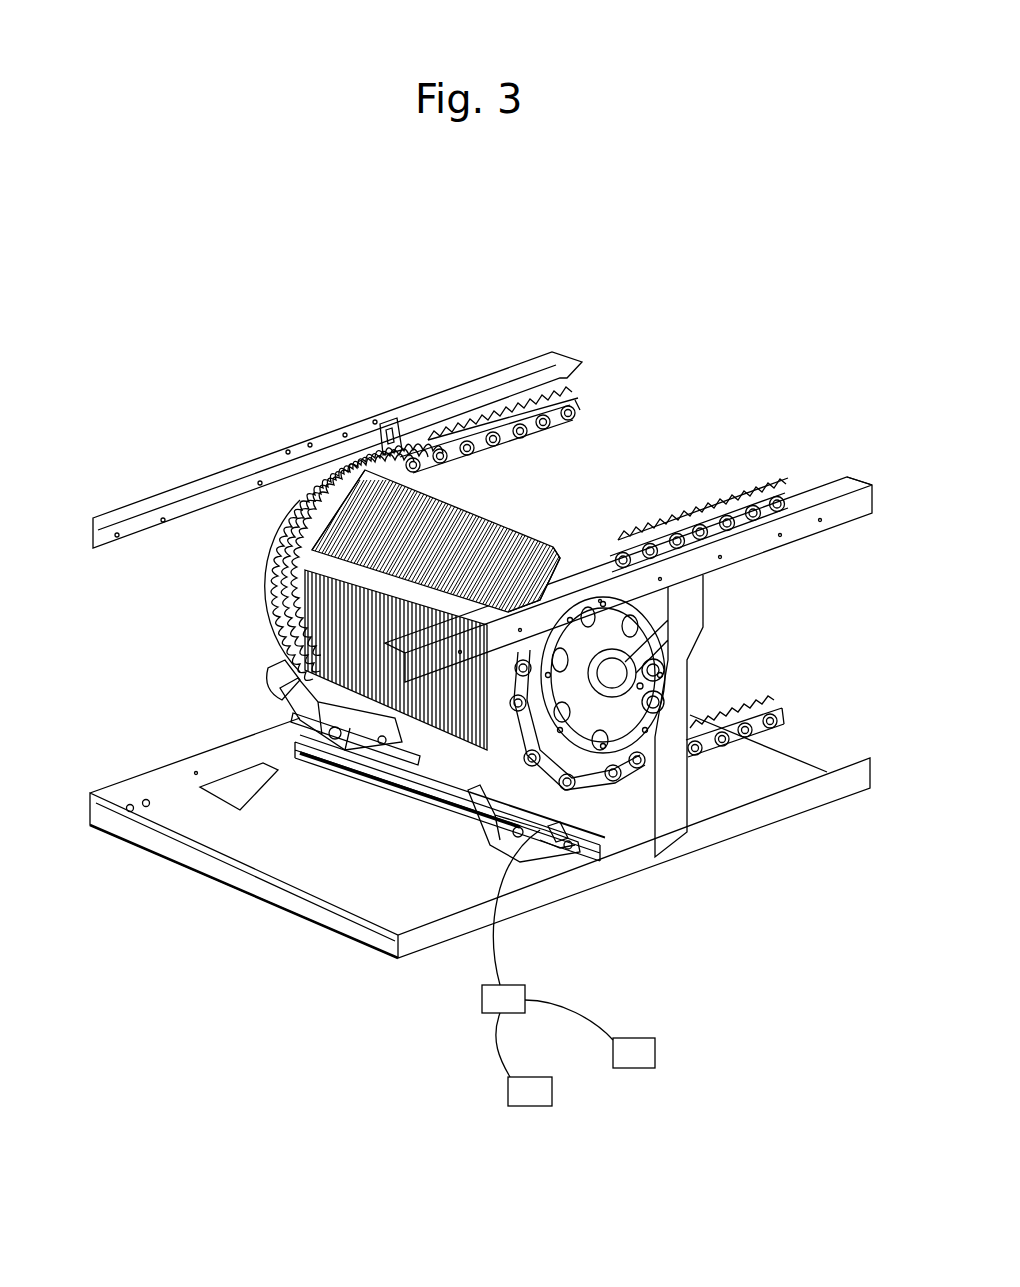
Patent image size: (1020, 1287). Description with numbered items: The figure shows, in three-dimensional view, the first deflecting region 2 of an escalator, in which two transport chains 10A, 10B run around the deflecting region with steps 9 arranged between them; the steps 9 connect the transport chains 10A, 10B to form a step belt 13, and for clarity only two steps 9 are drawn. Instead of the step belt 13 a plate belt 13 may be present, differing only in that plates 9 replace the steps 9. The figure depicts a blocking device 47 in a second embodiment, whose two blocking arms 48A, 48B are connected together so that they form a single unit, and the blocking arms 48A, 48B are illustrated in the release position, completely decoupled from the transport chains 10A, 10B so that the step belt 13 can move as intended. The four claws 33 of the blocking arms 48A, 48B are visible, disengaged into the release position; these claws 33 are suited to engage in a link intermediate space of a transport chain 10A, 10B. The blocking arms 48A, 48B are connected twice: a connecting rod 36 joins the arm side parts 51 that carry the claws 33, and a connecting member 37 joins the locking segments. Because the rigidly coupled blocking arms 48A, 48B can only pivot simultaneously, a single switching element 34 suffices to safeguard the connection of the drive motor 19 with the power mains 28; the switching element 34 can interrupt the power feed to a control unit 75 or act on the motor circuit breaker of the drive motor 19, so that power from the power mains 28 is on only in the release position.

The first deflecting region 2 is at (622, 338).
The steps 9 is at (473, 503).
The transport chain 10A is at (762, 487).
The transport chain 10B is at (560, 419).
The step belt 13 is at (288, 610).
The drive motor 19 is at (515, 1092).
The power mains 28 is at (638, 1057).
The claws 33 is at (580, 783).
The switching element 34 is at (550, 838).
The connecting rod 36 is at (415, 762).
The connecting member 37 is at (478, 762).
The blocking device 47 is at (350, 802).
The blocking arm 48A is at (300, 728).
The blocking arm 48B is at (472, 828).
The arm side parts 51 is at (560, 832).
The control unit 75 is at (488, 1000).